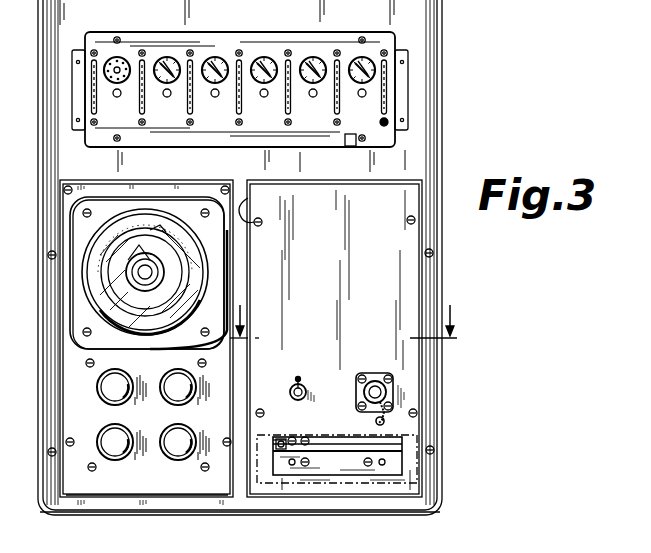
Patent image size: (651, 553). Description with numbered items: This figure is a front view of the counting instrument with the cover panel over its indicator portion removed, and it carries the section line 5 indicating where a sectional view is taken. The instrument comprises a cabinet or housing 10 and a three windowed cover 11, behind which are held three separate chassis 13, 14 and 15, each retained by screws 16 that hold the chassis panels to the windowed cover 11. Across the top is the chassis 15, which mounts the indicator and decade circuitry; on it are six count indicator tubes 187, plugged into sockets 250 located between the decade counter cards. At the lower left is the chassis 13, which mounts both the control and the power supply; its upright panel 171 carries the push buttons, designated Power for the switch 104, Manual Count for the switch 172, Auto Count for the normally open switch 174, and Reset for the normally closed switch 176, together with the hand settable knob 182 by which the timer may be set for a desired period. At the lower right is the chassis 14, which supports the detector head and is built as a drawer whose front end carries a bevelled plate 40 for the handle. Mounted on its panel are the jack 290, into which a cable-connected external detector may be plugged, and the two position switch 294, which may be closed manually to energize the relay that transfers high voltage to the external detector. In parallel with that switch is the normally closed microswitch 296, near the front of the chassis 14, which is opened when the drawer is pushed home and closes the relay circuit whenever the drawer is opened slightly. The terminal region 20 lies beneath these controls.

The cabinet or housing 10 is at (441, 30).
The three windowed cover 11 is at (428, 162).
The chassis 13 is at (75, 392).
The chassis 14 is at (410, 277).
The chassis 15 is at (203, 146).
The screws 16 is at (227, 191).
The terminal compartment 20 is at (404, 446).
The bevelled plate 40 is at (323, 452).
The power switch 104 is at (112, 458).
The upright panel 171 is at (133, 492).
The manual count switch 172 is at (122, 404).
The auto count switch 174 is at (176, 404).
The reset switch 176 is at (175, 458).
The hand settable knob 182 is at (83, 286).
The count indicator tubes 187 is at (310, 56).
The sockets 250 is at (112, 56).
The jack 290 is at (385, 362).
The two position switch 294 is at (302, 381).
The microswitch 296 is at (282, 440).
The section line 5- 5 is at (348, 316).